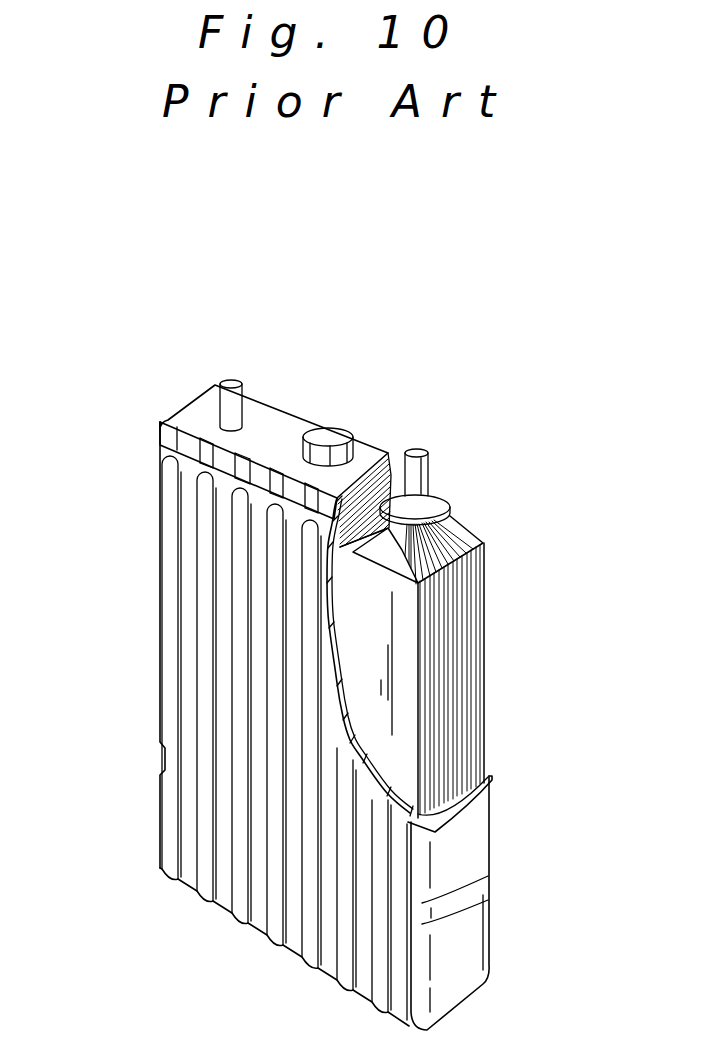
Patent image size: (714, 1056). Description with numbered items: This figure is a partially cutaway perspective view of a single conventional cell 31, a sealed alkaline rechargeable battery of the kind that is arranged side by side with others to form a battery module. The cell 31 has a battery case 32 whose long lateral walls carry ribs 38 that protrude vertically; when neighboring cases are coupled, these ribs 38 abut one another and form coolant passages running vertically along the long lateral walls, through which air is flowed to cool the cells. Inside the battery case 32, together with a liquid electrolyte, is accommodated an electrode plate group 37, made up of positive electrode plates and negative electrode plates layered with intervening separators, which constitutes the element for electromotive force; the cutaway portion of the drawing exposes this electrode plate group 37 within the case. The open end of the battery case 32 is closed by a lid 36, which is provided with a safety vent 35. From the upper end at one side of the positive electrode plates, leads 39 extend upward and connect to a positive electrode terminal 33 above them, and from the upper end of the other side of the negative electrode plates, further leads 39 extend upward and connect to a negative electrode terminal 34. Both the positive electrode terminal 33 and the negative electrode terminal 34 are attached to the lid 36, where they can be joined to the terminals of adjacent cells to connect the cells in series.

The cell 31 is at (237, 724).
The battery case 32 is at (472, 822).
The positive electrode terminal 33 is at (230, 386).
The negative electrode terminal 34 is at (417, 452).
The safety vent 35 is at (327, 437).
The lid 36 is at (273, 437).
The electrode plate group 37 is at (463, 607).
The ribs 38 is at (205, 732).
The leads 39 is at (400, 553).